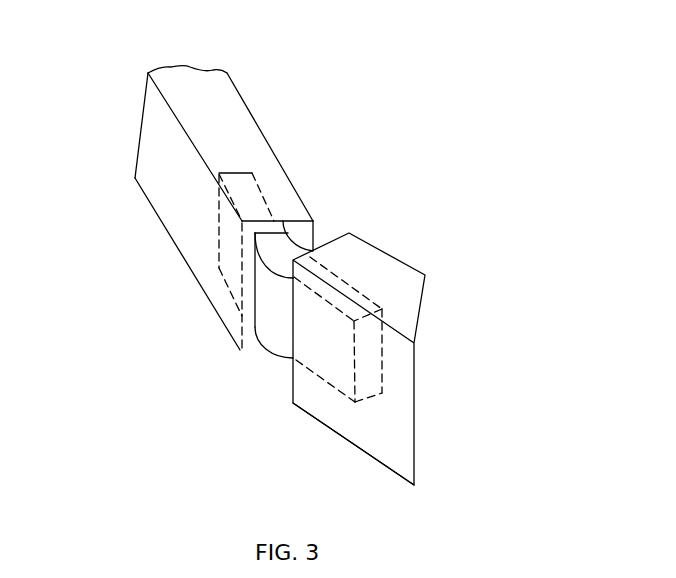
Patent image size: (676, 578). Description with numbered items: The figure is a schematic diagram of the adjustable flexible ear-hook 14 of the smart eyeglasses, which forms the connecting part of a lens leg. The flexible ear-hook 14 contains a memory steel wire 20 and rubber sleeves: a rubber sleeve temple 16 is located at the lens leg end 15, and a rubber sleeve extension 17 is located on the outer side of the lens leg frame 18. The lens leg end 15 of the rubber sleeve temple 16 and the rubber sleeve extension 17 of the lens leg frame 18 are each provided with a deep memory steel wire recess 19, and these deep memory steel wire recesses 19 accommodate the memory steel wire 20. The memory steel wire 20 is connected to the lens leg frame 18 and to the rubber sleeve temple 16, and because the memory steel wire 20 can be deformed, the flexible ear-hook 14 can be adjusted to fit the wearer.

The flexible ear-hook 14 is at (385, 187).
The lens leg end 15 is at (288, 175).
The rubber sleeve temple 16 is at (228, 117).
The rubber sleeve extension 17 is at (362, 263).
The lens leg frame 18 is at (414, 433).
The deep memory steel wire recess 19 is at (228, 232).
The memory steel wire 20 is at (277, 312).